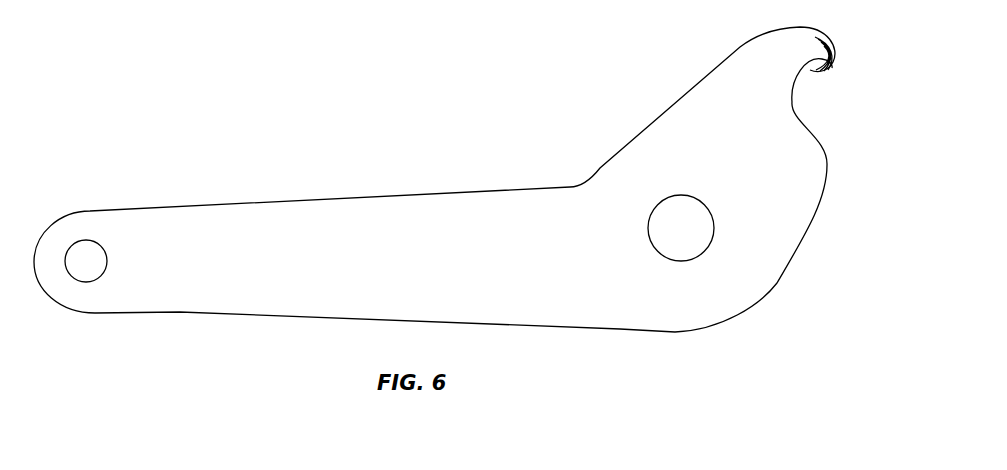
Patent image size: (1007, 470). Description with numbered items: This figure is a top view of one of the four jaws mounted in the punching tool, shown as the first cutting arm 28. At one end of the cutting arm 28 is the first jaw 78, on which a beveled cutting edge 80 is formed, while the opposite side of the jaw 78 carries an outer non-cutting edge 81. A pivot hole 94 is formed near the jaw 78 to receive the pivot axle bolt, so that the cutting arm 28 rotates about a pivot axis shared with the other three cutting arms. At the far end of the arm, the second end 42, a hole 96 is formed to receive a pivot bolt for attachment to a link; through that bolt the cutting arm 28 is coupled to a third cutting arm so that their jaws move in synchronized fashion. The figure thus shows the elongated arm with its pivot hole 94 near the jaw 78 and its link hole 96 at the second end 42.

The first cutting arm 28 is at (342, 207).
The second end 42 is at (68, 228).
The hole 96 is at (87, 254).
The pivot hole 94 is at (665, 220).
The first jaw 78 is at (810, 41).
The cutting edge 80 is at (836, 65).
The outer non-cutting edge 81 is at (803, 68).